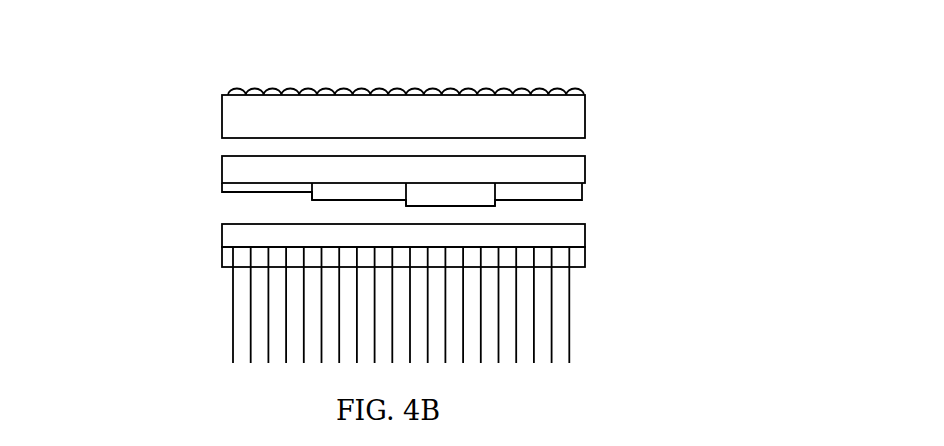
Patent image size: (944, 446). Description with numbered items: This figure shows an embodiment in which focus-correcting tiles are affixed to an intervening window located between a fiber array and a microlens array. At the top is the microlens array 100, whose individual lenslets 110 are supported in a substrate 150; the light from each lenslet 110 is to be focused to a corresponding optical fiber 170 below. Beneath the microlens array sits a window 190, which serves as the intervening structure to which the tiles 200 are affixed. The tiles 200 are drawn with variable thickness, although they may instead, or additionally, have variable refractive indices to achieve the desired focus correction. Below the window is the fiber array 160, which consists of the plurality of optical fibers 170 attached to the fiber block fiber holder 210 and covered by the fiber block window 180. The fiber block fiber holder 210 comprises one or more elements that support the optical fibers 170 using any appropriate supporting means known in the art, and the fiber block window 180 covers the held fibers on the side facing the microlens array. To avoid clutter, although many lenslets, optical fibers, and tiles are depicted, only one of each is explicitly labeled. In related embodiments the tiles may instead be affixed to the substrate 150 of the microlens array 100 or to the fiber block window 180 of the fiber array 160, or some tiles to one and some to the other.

The microlens array 100 is at (620, 114).
The lenslet 110 is at (232, 90).
The substrate 150 is at (225, 128).
The window 190 is at (228, 170).
The tile 200 is at (224, 192).
The fiber array 160 is at (636, 252).
The fiber block window 180 is at (222, 238).
The fiber block fiber holder 210 is at (222, 257).
The optical fiber 170 is at (233, 303).